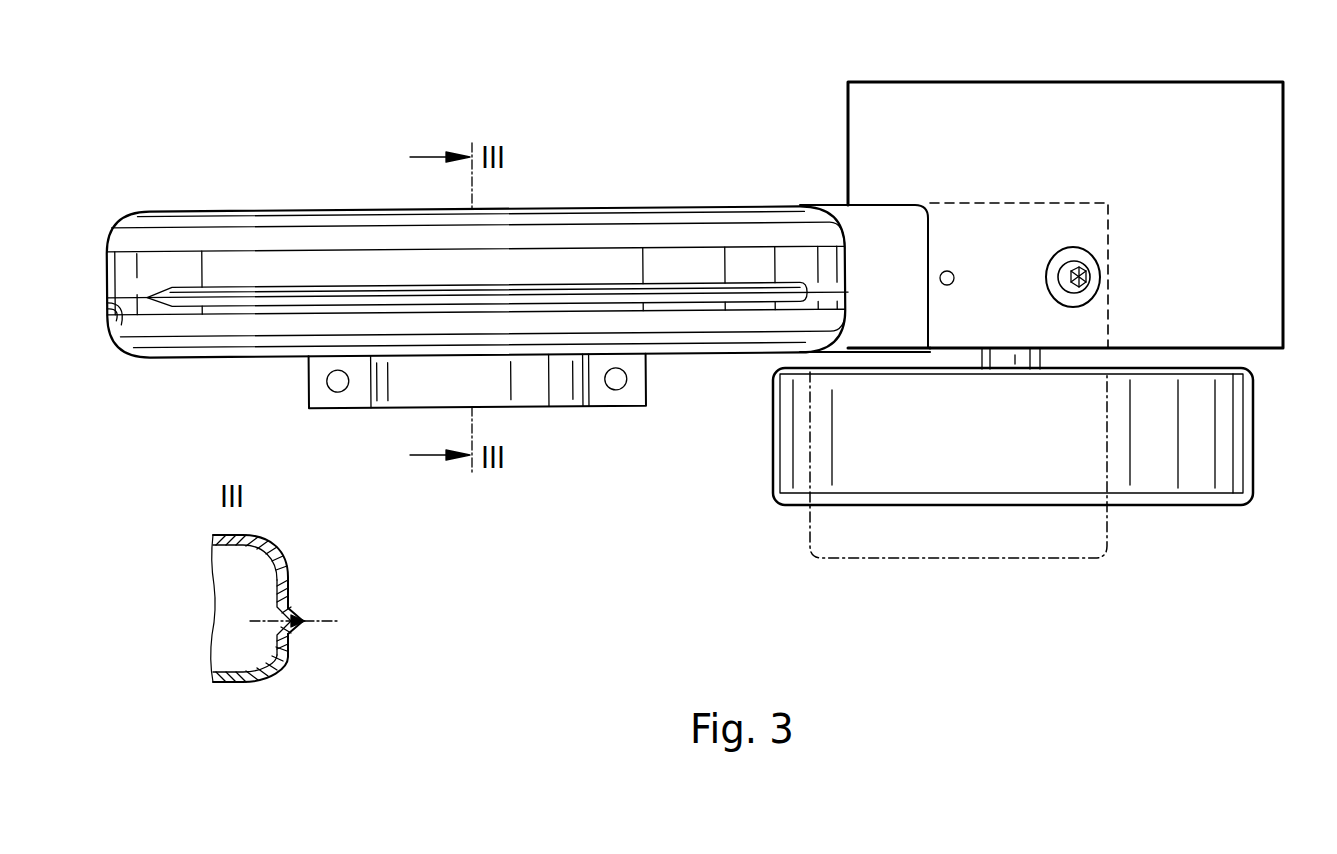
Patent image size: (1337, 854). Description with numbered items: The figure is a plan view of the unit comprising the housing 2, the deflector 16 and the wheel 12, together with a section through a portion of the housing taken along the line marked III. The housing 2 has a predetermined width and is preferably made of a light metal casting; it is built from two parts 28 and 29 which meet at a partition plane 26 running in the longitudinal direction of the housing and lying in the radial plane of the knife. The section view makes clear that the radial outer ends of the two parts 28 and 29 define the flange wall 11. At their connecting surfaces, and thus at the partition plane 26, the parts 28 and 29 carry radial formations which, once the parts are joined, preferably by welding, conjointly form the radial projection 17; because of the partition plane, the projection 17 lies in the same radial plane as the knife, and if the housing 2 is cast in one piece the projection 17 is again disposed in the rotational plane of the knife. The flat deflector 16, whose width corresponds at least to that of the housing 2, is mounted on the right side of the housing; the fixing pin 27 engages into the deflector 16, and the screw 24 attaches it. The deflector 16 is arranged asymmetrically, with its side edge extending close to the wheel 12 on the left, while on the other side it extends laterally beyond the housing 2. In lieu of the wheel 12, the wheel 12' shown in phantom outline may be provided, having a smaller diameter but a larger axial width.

In FIG. 3, the housing 2 is at (753, 197).
In FIG. 3a, the flange wall 11 is at (288, 575).
In FIG. 3, the wheel 12 is at (1048, 436).
In FIG. 3, the wheel 12' is at (958, 511).
In FIG. 3, the deflector 16 is at (1178, 105).
In FIG. 3, the radial projection 17 is at (580, 287).
In FIG. 3a, the radial projection 17 is at (297, 629).
In FIG. 3, the screw 24 is at (1085, 297).
In FIG. 3, the partition plane 26 is at (119, 326).
In FIG. 3a, the partition plane 26 is at (336, 622).
In FIG. 3, the fixing pin 27 is at (939, 278).
In FIG. 3, the housing part 28 is at (183, 344).
In FIG. 3a, the housing part 28 is at (230, 684).
In FIG. 3, the housing part 29 is at (186, 227).
In FIG. 3a, the housing part 29 is at (212, 541).